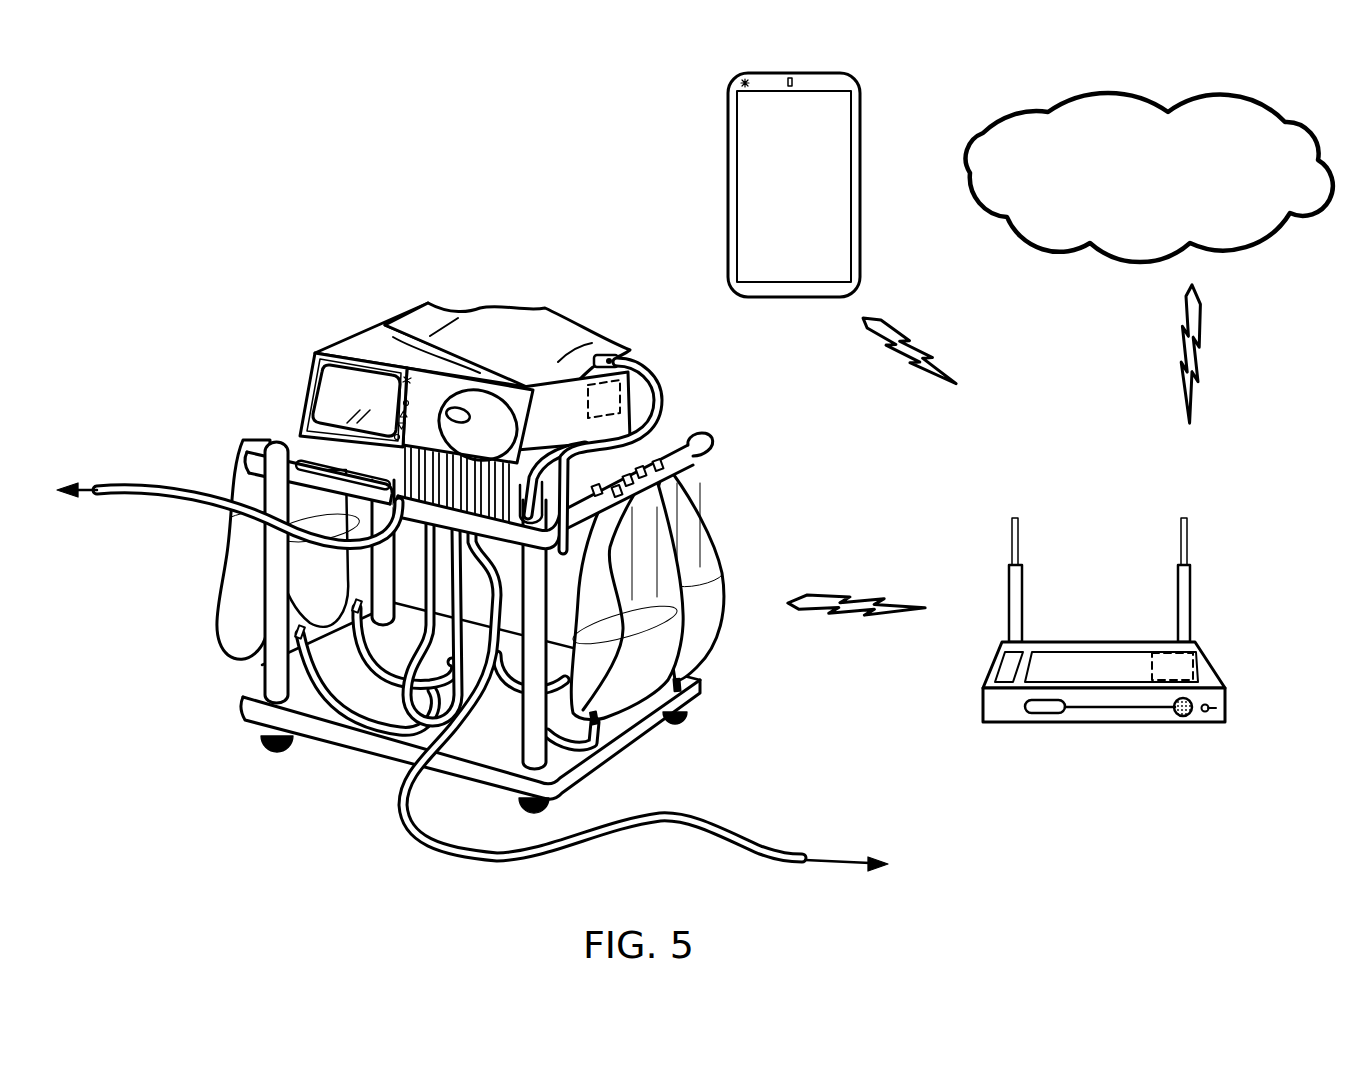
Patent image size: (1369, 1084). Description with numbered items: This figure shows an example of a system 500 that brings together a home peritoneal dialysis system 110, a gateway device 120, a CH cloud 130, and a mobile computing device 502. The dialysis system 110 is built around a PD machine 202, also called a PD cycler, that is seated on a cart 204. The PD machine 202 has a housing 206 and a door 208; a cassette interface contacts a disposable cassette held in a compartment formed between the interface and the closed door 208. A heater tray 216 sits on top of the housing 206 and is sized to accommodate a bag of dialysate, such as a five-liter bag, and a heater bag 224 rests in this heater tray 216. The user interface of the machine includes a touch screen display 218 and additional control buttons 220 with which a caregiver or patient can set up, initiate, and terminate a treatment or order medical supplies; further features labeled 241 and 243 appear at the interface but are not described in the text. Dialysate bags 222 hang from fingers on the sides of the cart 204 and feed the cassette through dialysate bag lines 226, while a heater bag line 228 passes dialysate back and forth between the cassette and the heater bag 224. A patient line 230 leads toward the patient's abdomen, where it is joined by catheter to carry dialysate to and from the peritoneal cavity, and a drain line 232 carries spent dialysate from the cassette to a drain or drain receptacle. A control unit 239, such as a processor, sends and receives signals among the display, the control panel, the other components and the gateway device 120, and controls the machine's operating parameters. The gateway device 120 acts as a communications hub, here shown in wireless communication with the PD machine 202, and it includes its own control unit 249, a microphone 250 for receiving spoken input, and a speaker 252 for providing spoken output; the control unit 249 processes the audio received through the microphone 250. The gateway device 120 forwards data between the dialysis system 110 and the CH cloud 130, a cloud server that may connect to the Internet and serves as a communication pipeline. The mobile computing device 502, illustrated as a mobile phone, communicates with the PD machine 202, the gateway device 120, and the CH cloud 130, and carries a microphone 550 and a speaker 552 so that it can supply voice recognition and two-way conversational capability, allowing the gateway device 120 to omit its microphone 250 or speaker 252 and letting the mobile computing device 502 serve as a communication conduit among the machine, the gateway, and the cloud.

The system 500 is at (200, 192).
The PD machine 202 is at (300, 352).
The cart 204 is at (690, 442).
The housing 206 is at (321, 355).
The door 208 is at (487, 407).
The heater tray 216 is at (615, 360).
The touch screen display 218 is at (330, 403).
The control buttons 220 is at (397, 408).
The dialysate bags 222 is at (240, 592).
The heater bag 224 is at (555, 333).
The dialysate bag lines 226 is at (267, 702).
The heater bag line 228 is at (666, 392).
The patient line 230 is at (150, 487).
The drain line 232 is at (700, 828).
The control unit 239 is at (716, 447).
The button 241 is at (400, 372).
The button 243 is at (403, 370).
The dialysis system 110 is at (830, 425).
The gateway device 120 is at (1225, 688).
The CH cloud 130 is at (1149, 177).
The control unit 249 is at (1200, 652).
The microphone 250 is at (1207, 709).
The speaker 252 is at (1190, 716).
The mobile computing device 502 is at (888, 122).
The microphone 550 is at (790, 78).
The speaker 552 is at (740, 83).